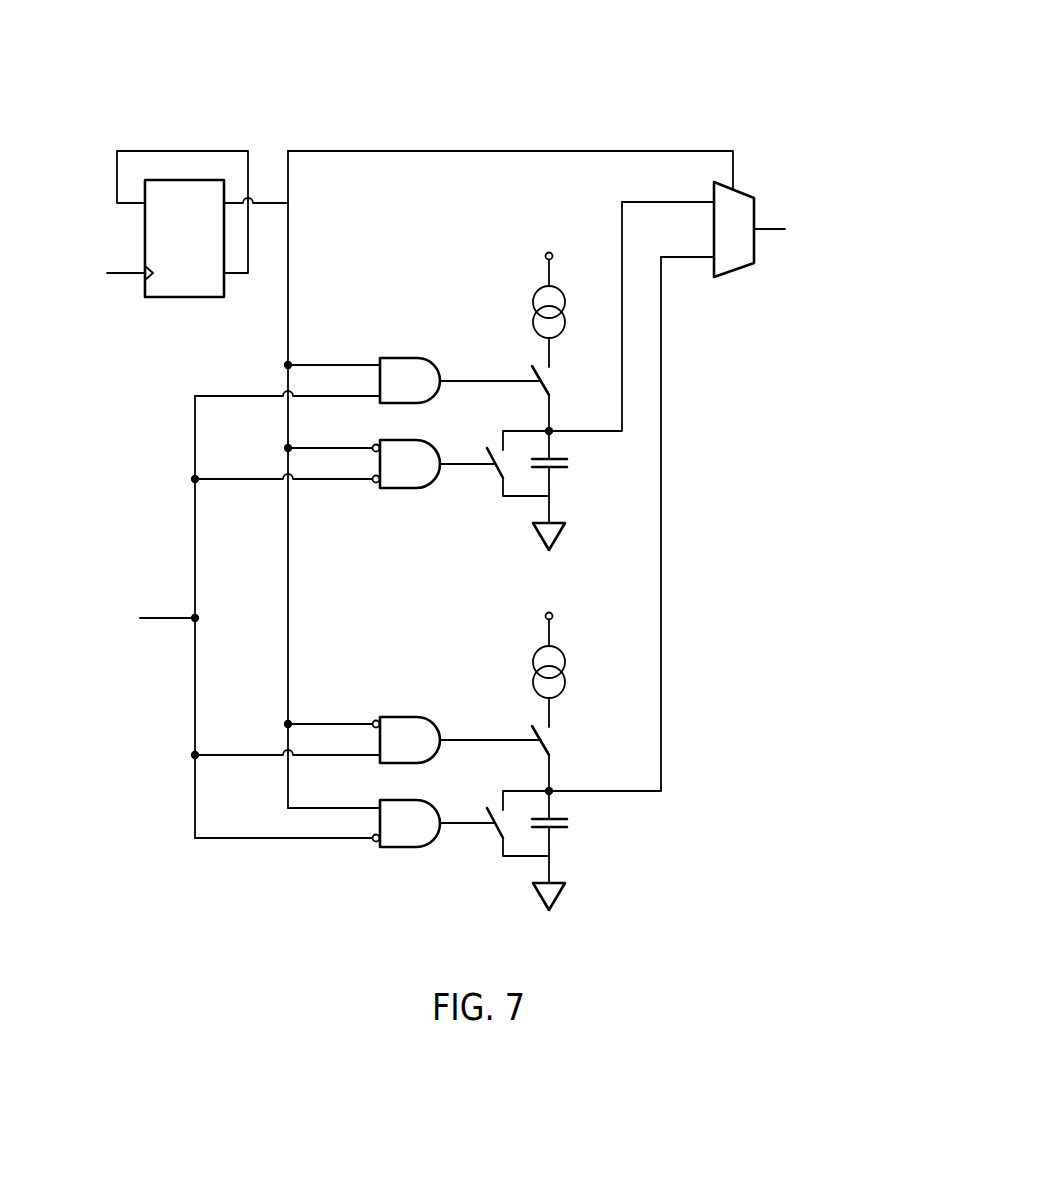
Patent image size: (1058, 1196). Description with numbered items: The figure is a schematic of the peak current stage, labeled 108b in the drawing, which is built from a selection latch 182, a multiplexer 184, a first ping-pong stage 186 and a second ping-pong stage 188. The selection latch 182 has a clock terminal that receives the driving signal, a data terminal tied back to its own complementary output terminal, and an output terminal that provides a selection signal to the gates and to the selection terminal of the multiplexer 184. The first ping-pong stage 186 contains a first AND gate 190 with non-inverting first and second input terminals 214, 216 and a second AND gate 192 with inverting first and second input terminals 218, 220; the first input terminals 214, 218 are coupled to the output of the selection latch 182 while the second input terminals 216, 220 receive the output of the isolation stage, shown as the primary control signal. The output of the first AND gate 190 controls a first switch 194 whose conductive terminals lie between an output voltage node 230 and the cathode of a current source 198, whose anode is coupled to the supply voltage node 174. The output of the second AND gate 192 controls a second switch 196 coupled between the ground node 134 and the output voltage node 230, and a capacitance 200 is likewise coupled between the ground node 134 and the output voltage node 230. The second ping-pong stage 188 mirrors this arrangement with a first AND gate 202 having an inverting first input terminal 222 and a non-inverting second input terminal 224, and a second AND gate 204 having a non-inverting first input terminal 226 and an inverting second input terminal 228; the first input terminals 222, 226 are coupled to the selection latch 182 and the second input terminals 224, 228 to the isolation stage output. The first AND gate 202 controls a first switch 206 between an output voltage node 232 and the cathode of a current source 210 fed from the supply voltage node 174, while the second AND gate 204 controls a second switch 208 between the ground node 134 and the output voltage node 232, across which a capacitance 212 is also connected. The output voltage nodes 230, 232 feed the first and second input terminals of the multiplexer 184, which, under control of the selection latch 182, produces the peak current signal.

The peak current control circuit 108b is at (732, 79).
The selection latch 182 is at (145, 240).
The multiplexer 184 is at (745, 192).
The first ping-pong stage 186 is at (428, 344).
The second ping-pong stage 188 is at (428, 700).
The first AND gate 190 is at (430, 357).
The second AND gate 192 is at (430, 441).
The first switch 194 is at (557, 377).
The second switch 196 is at (483, 472).
The current source 198 is at (533, 302).
The capacitance 200 is at (556, 467).
The first AND gate 202 is at (430, 717).
The second AND gate 204 is at (430, 800).
The first switch 206 is at (556, 738).
The second switch 208 is at (483, 833).
The current source 210 is at (533, 662).
The capacitance 212 is at (556, 828).
The first input terminal 214 is at (378, 363).
The second input terminal 216 is at (378, 395).
The first input terminal 218 is at (372, 447).
The second input terminal 220 is at (372, 478).
The first input terminal 222 is at (372, 722).
The second input terminal 224 is at (378, 754).
The first input terminal 226 is at (378, 807).
The second input terminal 228 is at (372, 836).
The output voltage node 230 is at (552, 430).
The output voltage node 232 is at (552, 790).
The supply voltage node 174 is at (545, 255).
The ground node 134 is at (556, 536).